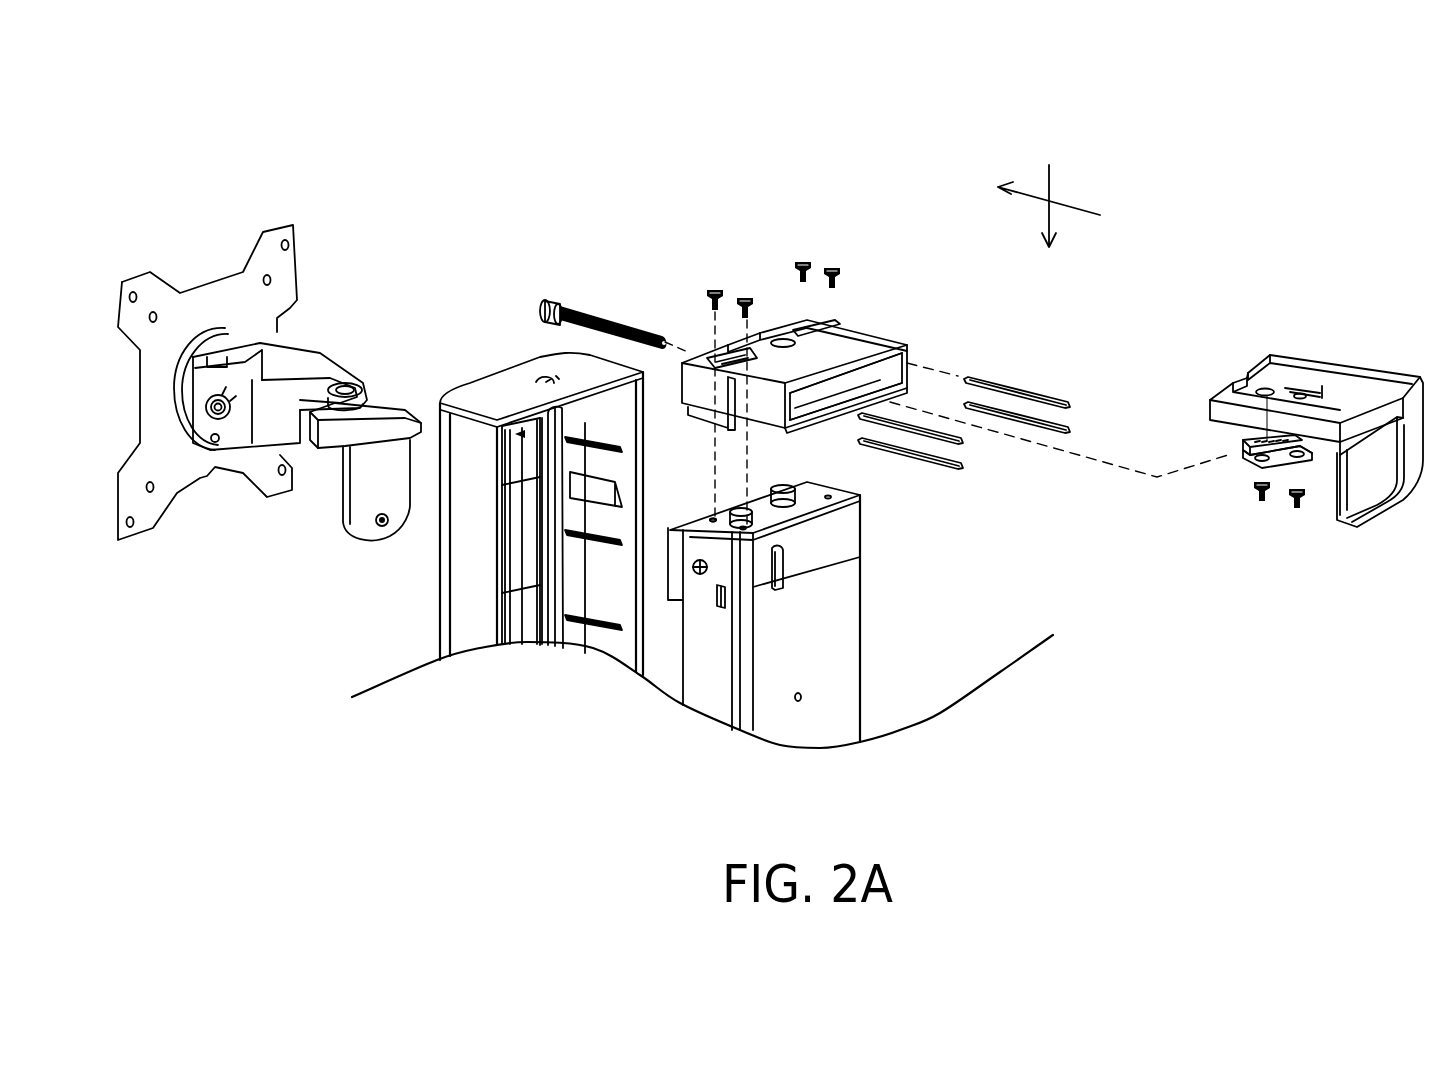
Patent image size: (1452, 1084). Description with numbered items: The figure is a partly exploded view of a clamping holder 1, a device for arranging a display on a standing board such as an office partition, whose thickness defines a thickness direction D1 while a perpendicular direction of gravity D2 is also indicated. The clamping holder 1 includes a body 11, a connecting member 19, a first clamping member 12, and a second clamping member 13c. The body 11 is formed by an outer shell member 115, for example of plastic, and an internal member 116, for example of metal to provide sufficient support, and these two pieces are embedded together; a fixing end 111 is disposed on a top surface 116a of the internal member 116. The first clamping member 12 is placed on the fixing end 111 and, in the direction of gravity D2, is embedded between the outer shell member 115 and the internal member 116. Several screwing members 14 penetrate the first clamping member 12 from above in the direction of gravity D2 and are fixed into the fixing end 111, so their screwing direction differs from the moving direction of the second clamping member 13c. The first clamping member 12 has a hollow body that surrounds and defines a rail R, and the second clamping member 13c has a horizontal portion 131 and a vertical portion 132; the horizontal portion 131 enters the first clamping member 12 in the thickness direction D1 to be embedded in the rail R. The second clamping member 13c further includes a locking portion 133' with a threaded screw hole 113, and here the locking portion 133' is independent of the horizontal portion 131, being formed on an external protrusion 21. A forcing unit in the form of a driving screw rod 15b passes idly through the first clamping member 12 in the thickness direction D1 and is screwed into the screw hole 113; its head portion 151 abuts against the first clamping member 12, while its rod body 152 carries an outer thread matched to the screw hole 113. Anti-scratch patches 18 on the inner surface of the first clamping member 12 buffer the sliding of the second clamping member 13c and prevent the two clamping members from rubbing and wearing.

The clamping holder 1 is at (732, 156).
The body 11 is at (253, 578).
The fixing end 111 is at (830, 480).
The outer shell member 115 is at (488, 393).
The internal member 116 is at (843, 660).
The top surface 116a is at (706, 506).
The first clamping member 12 is at (883, 337).
The second clamping member 13c is at (1451, 296).
The horizontal portion 131 is at (1357, 376).
The vertical portion 132 is at (1412, 425).
The locking portion 133' is at (1213, 433).
The screw hole 113 is at (1237, 462).
The screwing members 14 is at (710, 293).
The driving screw rod 15b is at (628, 232).
The head portion 151 is at (545, 302).
The rod body 152 is at (590, 314).
The anti-scratch patches 18 is at (1017, 385).
The connecting member 19 is at (275, 236).
The external protrusion 21 is at (1290, 465).
The rail R is at (810, 412).
The thickness direction D1 is at (1031, 193).
The direction of gravity D2 is at (1053, 227).